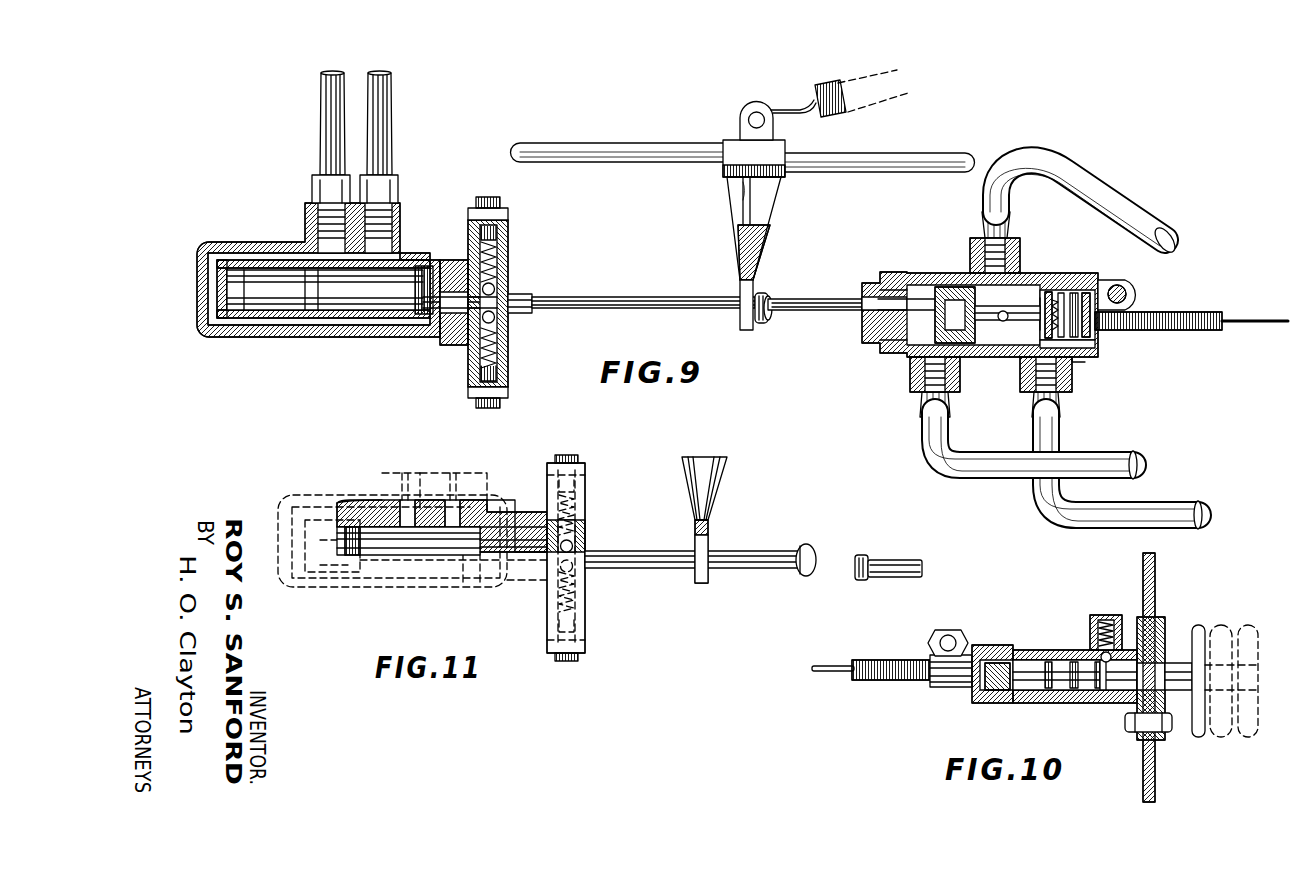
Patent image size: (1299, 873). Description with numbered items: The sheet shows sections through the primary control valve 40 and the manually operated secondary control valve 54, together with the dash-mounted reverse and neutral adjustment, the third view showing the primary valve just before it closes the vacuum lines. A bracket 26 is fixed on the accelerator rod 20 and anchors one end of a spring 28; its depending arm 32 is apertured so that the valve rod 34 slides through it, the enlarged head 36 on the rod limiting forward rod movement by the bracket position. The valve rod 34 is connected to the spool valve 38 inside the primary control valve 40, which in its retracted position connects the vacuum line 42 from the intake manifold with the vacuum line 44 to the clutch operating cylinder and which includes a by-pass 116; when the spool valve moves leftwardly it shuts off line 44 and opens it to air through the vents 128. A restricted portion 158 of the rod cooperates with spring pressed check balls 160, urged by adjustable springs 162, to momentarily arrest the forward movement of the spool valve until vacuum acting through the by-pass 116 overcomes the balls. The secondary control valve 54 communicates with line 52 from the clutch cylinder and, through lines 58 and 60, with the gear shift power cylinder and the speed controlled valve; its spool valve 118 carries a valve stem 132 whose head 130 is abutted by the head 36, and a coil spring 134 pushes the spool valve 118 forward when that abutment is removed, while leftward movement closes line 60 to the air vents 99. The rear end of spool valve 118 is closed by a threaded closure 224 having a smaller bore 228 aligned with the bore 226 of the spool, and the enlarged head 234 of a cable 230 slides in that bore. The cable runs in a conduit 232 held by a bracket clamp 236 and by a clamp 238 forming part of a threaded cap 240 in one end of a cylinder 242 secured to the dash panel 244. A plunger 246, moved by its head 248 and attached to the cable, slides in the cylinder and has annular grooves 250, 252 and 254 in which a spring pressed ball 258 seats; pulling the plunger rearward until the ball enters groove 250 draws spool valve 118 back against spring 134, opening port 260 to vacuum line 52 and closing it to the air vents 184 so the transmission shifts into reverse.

In FIG. 9, the accelerator rod 20 is at (862, 152).
In FIG. 9, the bracket 26 is at (738, 148).
In FIG. 9, the spring 28 is at (810, 98).
In FIG. 9, the depending arm 32 is at (740, 248).
In FIG. 11, the depending arm 32 is at (702, 507).
In FIG. 9, the valve rod 34 is at (580, 300).
In FIG. 11, the valve rod 34 is at (762, 553).
In FIG. 9, the enlarged head 36 is at (766, 322).
In FIG. 11, the enlarged head 36 is at (803, 575).
In FIG. 9, the spool valve 38 is at (372, 300).
In FIG. 11, the spool valve 38 is at (390, 555).
In FIG. 9, the primary control valve 40 is at (255, 337).
In FIG. 11, the primary control valve 40 is at (320, 587).
In FIG. 9, the vacuum line 42 is at (325, 112).
In FIG. 11, the vacuum line 42 is at (405, 495).
In FIG. 9, the vacuum line 44 is at (378, 122).
In FIG. 11, the vacuum line 44 is at (462, 495).
In FIG. 9, the line 52 is at (1125, 205).
In FIG. 9, the secondary control valve 54 is at (912, 280).
In FIG. 9, the line 58 is at (1150, 508).
In FIG. 9, the line 60 is at (1108, 460).
In FIG. 9, the air vents 99 is at (868, 292).
In FIG. 9, the by-pass 116 is at (236, 242).
In FIG. 11, the by-pass 116 is at (310, 505).
In FIG. 9, the spool valve 118 is at (975, 278).
In FIG. 9, the air vents 128 is at (455, 262).
In FIG. 11, the air vents 128 is at (525, 515).
In FIG. 9, the head 130 is at (766, 300).
In FIG. 11, the head 130 is at (860, 560).
In FIG. 9, the valve stem 132 is at (830, 312).
In FIG. 11, the valve stem 132 is at (895, 565).
In FIG. 9, the coil spring 134 is at (1086, 292).
In FIG. 9, the restricted portion 158 is at (516, 298).
In FIG. 9, the check balls 160 is at (494, 290).
In FIG. 11, the check balls 160 is at (576, 550).
In FIG. 9, the springs 162 is at (492, 282).
In FIG. 11, the springs 162 is at (572, 535).
In FIG. 9, the air vents 184 is at (1098, 350).
In FIG. 9, the threaded closure 224 is at (1061, 292).
In FIG. 9, the bore 226 is at (1048, 290).
In FIG. 9, the smaller bore 228 is at (1074, 292).
In FIG. 9, the cable 230 is at (1240, 320).
In FIG. 10, the cable 230 is at (822, 672).
In FIG. 9, the conduit 232 is at (1175, 312).
In FIG. 10, the conduit 232 is at (875, 660).
In FIG. 9, the enlarged head 234 is at (1003, 323).
In FIG. 9, the bracket clamp 236 is at (1128, 298).
In FIG. 10, the clamp 238 is at (945, 680).
In FIG. 10, the threaded cap 240 is at (982, 648).
In FIG. 10, the cylinder 242 is at (1022, 650).
In FIG. 10, the dash panel 244 is at (1158, 585).
In FIG. 10, the plunger 246 is at (1180, 662).
In FIG. 10, the head 248 is at (1205, 650).
In FIG. 10, the annular groove 250 is at (1045, 703).
In FIG. 10, the annular groove 252 is at (1075, 692).
In FIG. 10, the annular groove 254 is at (1103, 692).
In FIG. 10, the spring pressed ball 258 is at (1097, 650).
In FIG. 9, the port 260 is at (1075, 360).